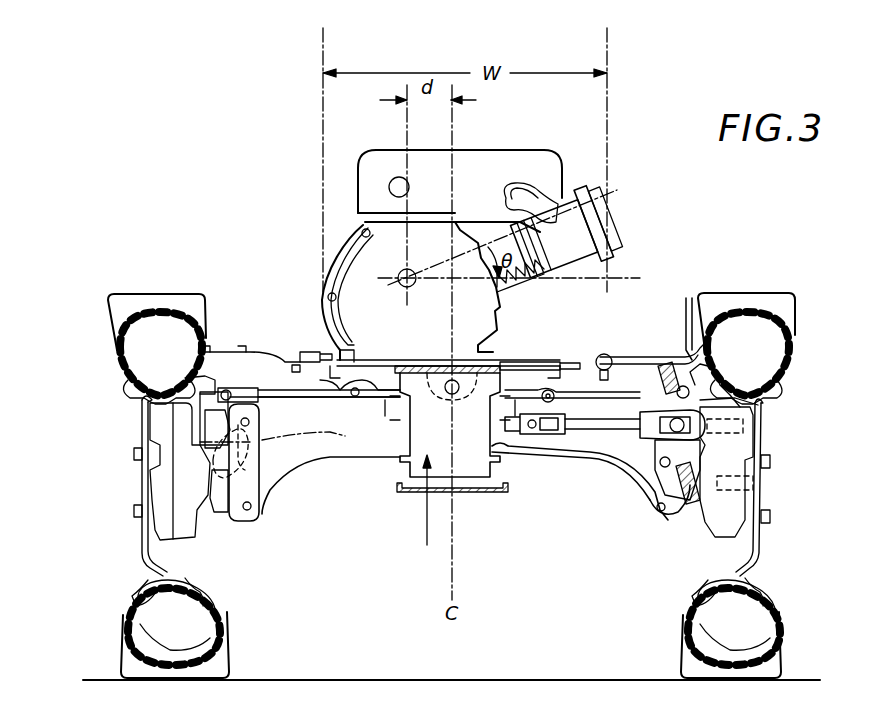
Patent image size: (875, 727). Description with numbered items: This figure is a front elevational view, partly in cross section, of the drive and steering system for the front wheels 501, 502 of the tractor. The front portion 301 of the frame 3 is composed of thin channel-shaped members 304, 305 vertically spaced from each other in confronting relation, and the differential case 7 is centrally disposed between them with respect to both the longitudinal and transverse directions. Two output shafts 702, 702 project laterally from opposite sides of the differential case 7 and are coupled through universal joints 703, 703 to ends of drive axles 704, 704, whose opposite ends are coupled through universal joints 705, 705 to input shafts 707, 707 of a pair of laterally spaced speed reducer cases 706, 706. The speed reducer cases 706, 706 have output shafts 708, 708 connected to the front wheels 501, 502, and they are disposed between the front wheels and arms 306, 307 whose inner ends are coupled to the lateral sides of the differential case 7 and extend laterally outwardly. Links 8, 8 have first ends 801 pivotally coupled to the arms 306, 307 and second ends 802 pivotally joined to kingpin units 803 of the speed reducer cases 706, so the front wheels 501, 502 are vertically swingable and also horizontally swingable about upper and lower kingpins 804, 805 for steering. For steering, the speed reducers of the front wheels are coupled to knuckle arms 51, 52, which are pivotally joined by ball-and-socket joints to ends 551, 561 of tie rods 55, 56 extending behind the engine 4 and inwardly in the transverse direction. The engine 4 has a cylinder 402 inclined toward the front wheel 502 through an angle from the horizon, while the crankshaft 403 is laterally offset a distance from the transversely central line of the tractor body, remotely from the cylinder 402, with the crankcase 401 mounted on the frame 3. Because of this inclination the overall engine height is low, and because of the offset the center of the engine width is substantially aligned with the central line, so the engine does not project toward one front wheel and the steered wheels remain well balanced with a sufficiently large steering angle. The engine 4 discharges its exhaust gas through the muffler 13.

The frame 3 is at (455, 500).
The engine 4 is at (338, 224).
The differential case 7 is at (423, 513).
The links 8 is at (302, 398).
The muffler 13 is at (504, 160).
The knuckle arm 51 is at (268, 352).
The knuckle arm 52 is at (686, 298).
The tie rod 55 is at (325, 352).
The tie rod 56 is at (578, 362).
The front portion 301 is at (484, 493).
The channel-shaped member 304 is at (410, 366).
The channel-shaped member 305 is at (397, 492).
The arm 306 is at (316, 462).
The arm 307 is at (642, 500).
The crankcase 401 is at (352, 262).
The cylinder 402 is at (557, 262).
The crankshaft 403 is at (400, 275).
The front wheel 501 is at (797, 340).
The front wheel 502 is at (110, 352).
The end of tie rod 551 is at (296, 352).
The end of tie rod 561 is at (615, 356).
The output shaft 702 is at (512, 428).
The universal joint 703 is at (540, 445).
The drive axle 704 is at (582, 440).
The universal joint 705 is at (758, 410).
The speed reducer case 706 is at (160, 488).
The input shaft 707 is at (750, 432).
The output shaft 708 is at (760, 485).
The first end 801 is at (356, 398).
The second end 802 is at (192, 400).
The kingpin unit 803 is at (215, 432).
The upper kingpin 804 is at (662, 366).
The lower kingpin 805 is at (690, 504).